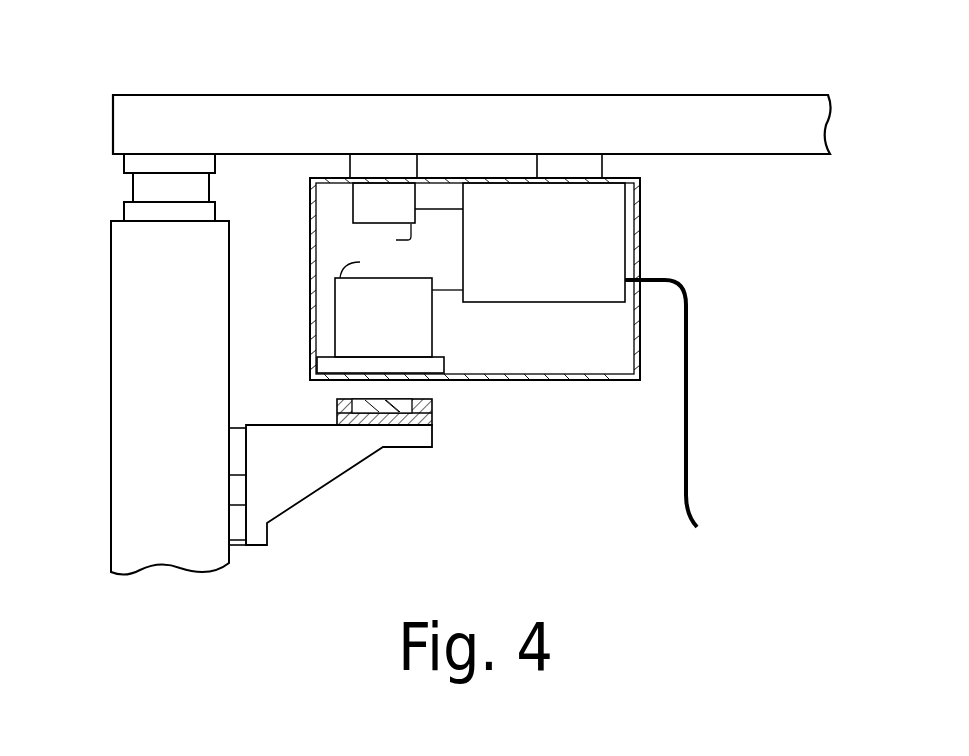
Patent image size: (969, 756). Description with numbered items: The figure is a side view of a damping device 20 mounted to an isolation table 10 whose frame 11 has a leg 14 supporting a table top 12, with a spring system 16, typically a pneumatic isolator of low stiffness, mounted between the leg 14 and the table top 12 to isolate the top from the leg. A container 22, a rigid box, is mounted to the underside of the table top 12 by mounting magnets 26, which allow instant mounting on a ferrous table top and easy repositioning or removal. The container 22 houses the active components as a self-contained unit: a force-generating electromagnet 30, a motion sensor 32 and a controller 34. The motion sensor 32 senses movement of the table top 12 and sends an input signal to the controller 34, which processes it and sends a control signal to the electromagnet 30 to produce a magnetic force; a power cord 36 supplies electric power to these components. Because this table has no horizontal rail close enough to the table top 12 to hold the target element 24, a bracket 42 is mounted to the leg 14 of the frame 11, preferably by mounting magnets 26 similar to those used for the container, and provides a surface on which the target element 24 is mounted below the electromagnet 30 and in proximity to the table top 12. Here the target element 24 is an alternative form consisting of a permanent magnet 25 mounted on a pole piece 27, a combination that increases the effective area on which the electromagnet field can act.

The isolation table 10 is at (104, 68).
The frame 11 is at (92, 300).
The table top 12 is at (297, 95).
The leg 14 is at (111, 395).
The spring system 16 is at (145, 185).
The damping device 20 is at (720, 247).
The container 22 is at (640, 212).
The target element 24 is at (452, 432).
The permanent magnet 25 is at (388, 399).
The mounting magnets 26 is at (379, 165).
The pole piece 27 is at (432, 406).
The electromagnet 30 is at (390, 311).
The motion sensor 32 is at (391, 216).
The controller 34 is at (544, 242).
The power cord 36 is at (688, 357).
The bracket 42 is at (342, 456).